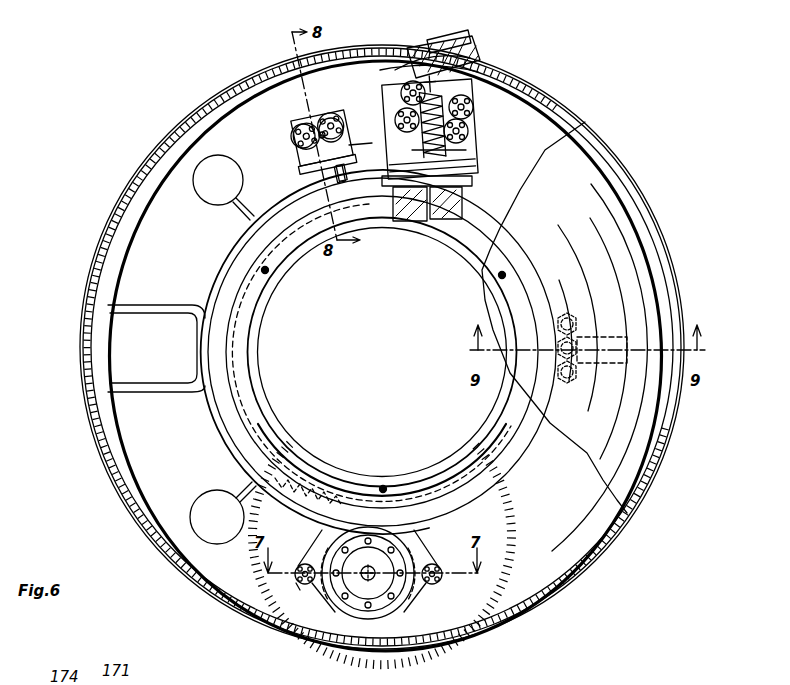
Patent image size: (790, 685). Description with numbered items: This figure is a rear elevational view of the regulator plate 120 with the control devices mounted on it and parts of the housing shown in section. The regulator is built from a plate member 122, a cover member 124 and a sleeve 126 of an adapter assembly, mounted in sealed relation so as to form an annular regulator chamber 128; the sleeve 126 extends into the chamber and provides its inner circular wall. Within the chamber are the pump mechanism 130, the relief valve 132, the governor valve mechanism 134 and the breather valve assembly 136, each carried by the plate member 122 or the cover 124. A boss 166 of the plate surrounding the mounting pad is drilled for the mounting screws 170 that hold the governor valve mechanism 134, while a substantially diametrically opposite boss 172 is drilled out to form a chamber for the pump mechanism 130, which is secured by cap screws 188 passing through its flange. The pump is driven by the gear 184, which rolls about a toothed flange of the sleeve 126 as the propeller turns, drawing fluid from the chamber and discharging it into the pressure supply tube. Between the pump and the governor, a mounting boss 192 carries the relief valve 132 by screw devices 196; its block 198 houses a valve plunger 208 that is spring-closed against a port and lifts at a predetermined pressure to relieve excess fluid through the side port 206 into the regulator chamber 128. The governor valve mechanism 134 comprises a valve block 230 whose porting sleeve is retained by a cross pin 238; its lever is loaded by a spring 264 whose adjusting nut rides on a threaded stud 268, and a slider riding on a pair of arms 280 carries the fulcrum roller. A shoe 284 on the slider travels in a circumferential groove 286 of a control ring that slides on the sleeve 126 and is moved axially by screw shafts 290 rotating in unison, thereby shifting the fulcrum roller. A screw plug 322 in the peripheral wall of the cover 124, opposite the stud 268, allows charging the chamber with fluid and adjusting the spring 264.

The regulator plate 120 is at (637, 118).
The plate member 122 is at (580, 532).
The cover member 124 is at (624, 218).
The sleeve 126 is at (254, 352).
The regulator chamber 128 is at (190, 274).
The pump mechanism 130 is at (403, 604).
The relief valve 132 is at (300, 155).
The governor valve mechanism 134 is at (526, 142).
The breather valve assembly 136 is at (607, 343).
The boss 166 is at (393, 98).
The mounting screws 170 is at (471, 107).
The boss 172 is at (426, 586).
The gear 184 is at (300, 586).
The cap screws 188 is at (304, 563).
The mounting boss 192 is at (331, 118).
The screw devices 196 is at (300, 128).
The block 198 is at (322, 174).
The side port 206 is at (335, 142).
The valve plunger 208 is at (312, 228).
The valve block 230 is at (360, 152).
The cross pin 238 is at (472, 50).
The spring 264 is at (470, 156).
The threaded stud 268 is at (413, 52).
The arms 280 is at (471, 182).
The shoe 284 is at (440, 219).
The circumferential groove 286 is at (400, 221).
The screw shafts 290 is at (268, 273).
The screw plug 322 is at (458, 38).